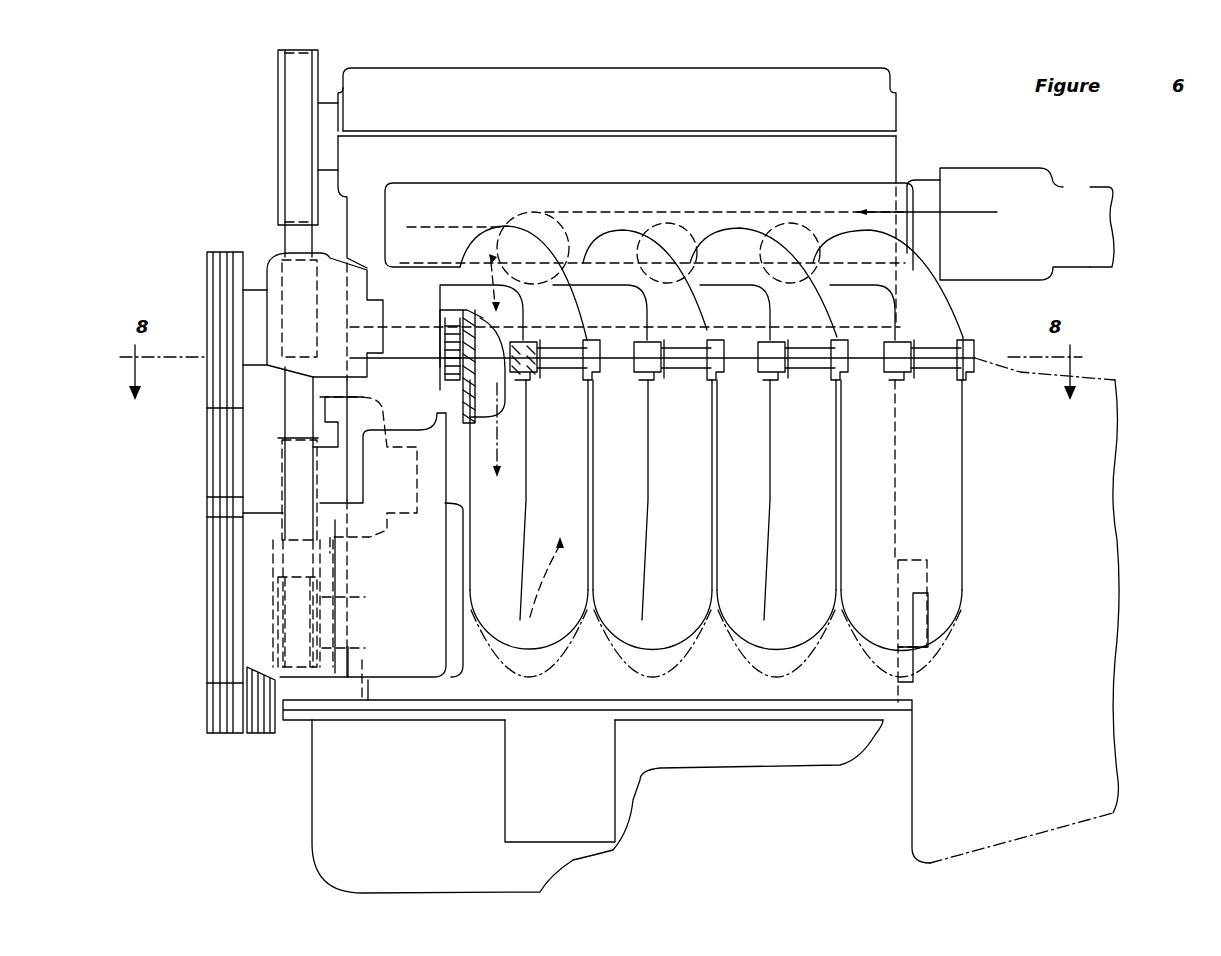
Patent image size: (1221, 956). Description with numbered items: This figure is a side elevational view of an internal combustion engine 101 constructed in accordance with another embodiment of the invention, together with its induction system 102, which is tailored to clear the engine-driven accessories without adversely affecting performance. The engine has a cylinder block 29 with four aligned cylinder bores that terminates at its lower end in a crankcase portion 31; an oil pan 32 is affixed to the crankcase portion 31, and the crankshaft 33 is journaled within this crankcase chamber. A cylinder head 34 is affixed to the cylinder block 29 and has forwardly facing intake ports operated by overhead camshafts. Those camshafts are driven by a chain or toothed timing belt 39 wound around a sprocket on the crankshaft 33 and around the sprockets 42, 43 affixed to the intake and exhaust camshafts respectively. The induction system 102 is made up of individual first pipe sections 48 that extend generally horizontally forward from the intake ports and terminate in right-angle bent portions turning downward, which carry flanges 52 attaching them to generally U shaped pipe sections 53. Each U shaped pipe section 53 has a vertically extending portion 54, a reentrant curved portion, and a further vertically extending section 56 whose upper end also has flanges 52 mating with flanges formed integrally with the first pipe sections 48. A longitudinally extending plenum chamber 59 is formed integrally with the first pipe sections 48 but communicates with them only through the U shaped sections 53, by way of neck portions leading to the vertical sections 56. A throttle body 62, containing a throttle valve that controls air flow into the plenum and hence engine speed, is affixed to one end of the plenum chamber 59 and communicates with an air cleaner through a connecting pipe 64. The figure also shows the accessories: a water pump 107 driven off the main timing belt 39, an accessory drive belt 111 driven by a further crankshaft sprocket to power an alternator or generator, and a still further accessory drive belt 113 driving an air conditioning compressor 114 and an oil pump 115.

The cylinder block 29 is at (393, 340).
The crankcase portion 31 is at (370, 693).
The oil pan 32 is at (323, 848).
The crankshaft 33 is at (347, 647).
The cylinder head 34 is at (493, 158).
The timing belt 39 is at (293, 240).
The sprocket 42 is at (277, 140).
The sprocket 43 is at (400, 82).
The first pipe sections 48 is at (647, 215).
The flanges 52 is at (445, 370).
The U shaped pipe section 53 is at (607, 553).
The vertically extending portion 54 is at (521, 482).
The vertically extending section 56 is at (470, 493).
The plenum chamber 59 is at (743, 200).
The throttle body 62 is at (1027, 173).
The connecting pipe 64 is at (1103, 187).
The engine 101 is at (832, 56).
The induction system 102 is at (708, 700).
The water pump 107 is at (392, 507).
The accessory drive belt 111 is at (250, 735).
The accessory drive belt 113 is at (218, 463).
The air conditioning compressor 114 is at (415, 663).
The oil pump 115 is at (357, 270).